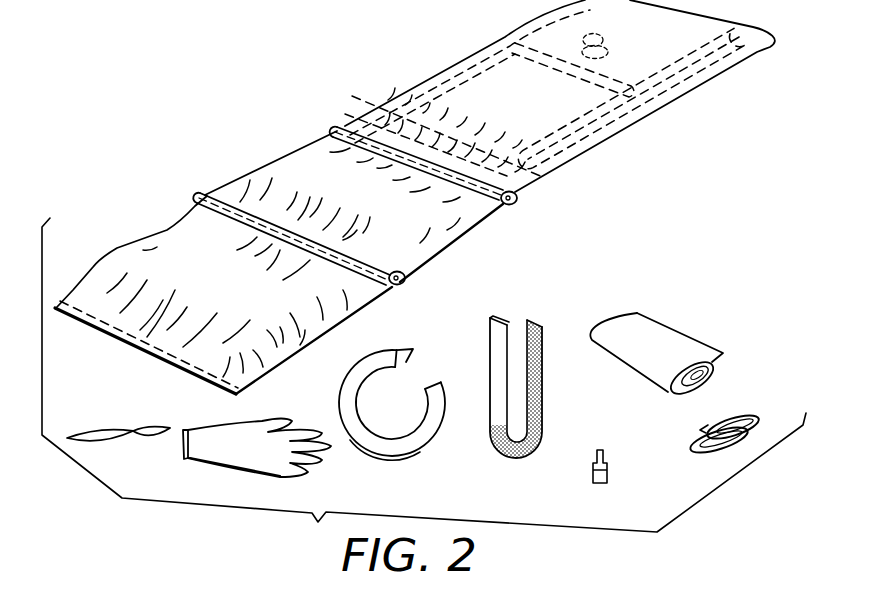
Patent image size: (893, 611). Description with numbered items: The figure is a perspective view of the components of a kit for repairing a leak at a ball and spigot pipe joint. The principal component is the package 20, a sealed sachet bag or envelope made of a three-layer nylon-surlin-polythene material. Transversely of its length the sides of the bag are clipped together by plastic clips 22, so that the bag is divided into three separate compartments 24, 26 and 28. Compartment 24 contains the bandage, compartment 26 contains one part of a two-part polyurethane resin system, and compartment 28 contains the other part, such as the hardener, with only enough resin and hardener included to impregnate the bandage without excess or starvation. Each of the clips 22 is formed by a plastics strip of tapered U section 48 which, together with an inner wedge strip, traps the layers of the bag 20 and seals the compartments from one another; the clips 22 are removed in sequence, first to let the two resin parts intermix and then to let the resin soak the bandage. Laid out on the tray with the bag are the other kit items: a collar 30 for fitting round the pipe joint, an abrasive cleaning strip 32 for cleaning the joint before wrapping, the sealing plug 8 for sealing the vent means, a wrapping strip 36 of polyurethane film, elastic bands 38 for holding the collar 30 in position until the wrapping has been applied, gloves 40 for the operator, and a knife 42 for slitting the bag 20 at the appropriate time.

The sealing plug 8 is at (607, 469).
The package 20 is at (415, 197).
The plastic clips 22 is at (224, 206).
The compartment 24 is at (553, 177).
The compartment 26 is at (436, 238).
The compartment 28 is at (175, 240).
The collar 30 is at (372, 443).
The abrasive cleaning strip 32 is at (504, 458).
The wrapping strip 36 is at (650, 353).
The elastic bands 38 is at (705, 449).
The gloves 40 is at (243, 447).
The knife 42 is at (112, 436).
The tapered U section strip 48 is at (398, 279).